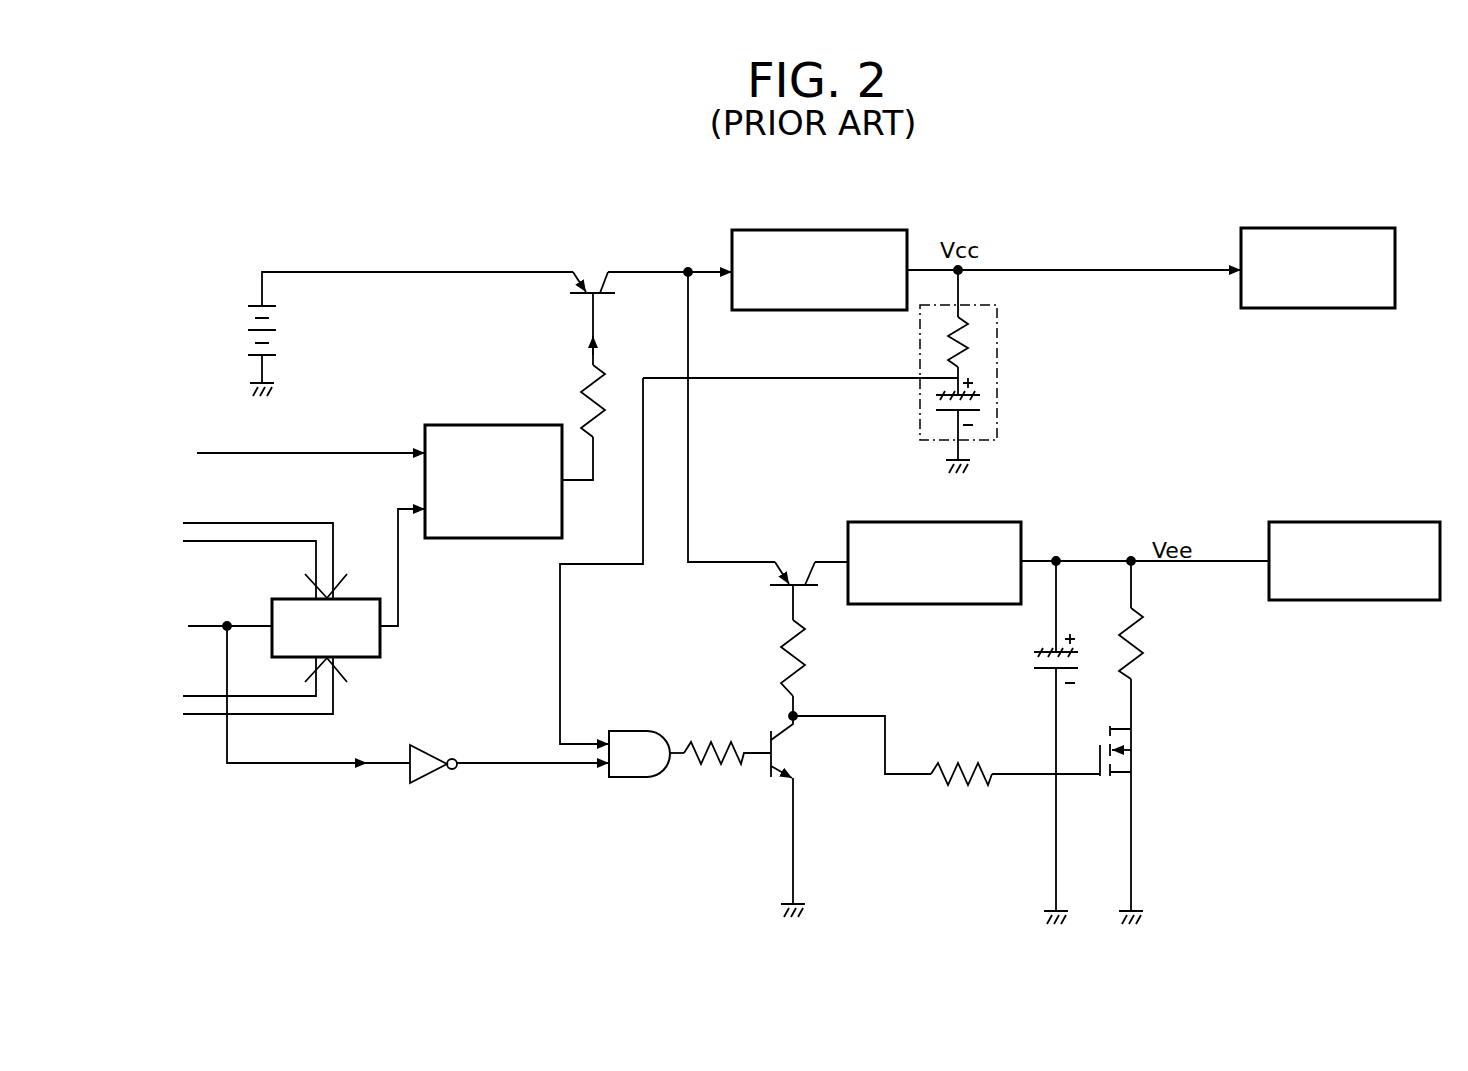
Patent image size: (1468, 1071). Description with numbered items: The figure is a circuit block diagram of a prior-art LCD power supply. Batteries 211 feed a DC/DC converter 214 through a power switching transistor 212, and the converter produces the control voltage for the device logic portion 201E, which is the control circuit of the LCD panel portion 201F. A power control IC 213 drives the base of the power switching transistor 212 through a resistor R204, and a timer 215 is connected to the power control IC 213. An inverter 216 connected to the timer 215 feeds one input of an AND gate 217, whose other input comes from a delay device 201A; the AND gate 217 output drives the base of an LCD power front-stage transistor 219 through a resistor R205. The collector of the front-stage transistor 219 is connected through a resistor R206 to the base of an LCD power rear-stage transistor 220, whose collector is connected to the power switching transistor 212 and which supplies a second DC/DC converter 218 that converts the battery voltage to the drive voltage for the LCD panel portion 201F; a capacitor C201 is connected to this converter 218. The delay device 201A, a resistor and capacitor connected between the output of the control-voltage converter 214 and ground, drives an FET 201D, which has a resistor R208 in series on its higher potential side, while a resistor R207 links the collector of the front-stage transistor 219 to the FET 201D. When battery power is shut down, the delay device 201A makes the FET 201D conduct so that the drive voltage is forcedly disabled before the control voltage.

The batteries 211 is at (248, 316).
The power switching transistor 212 is at (600, 272).
The power control IC 213 is at (443, 425).
The DC/DC converter 214 is at (882, 230).
The timer 215 is at (380, 641).
The inverter 216 is at (432, 746).
The AND gate 217 is at (627, 731).
The DC/DC converter 218 is at (1000, 522).
The LCD power front-stage transistor 219 is at (770, 778).
The LCD power rear-stage transistor 220 is at (800, 578).
The resistor R204 is at (586, 378).
The resistor R205 is at (705, 740).
The resistor R206 is at (785, 654).
The resistor R207 is at (957, 790).
The resistor R208 is at (1145, 656).
The capacitor C201 is at (1042, 672).
The delay device 201A is at (997, 322).
The FET 201D is at (1133, 746).
The device logic portion 201E is at (1378, 228).
The LCD panel portion 201F is at (1410, 522).